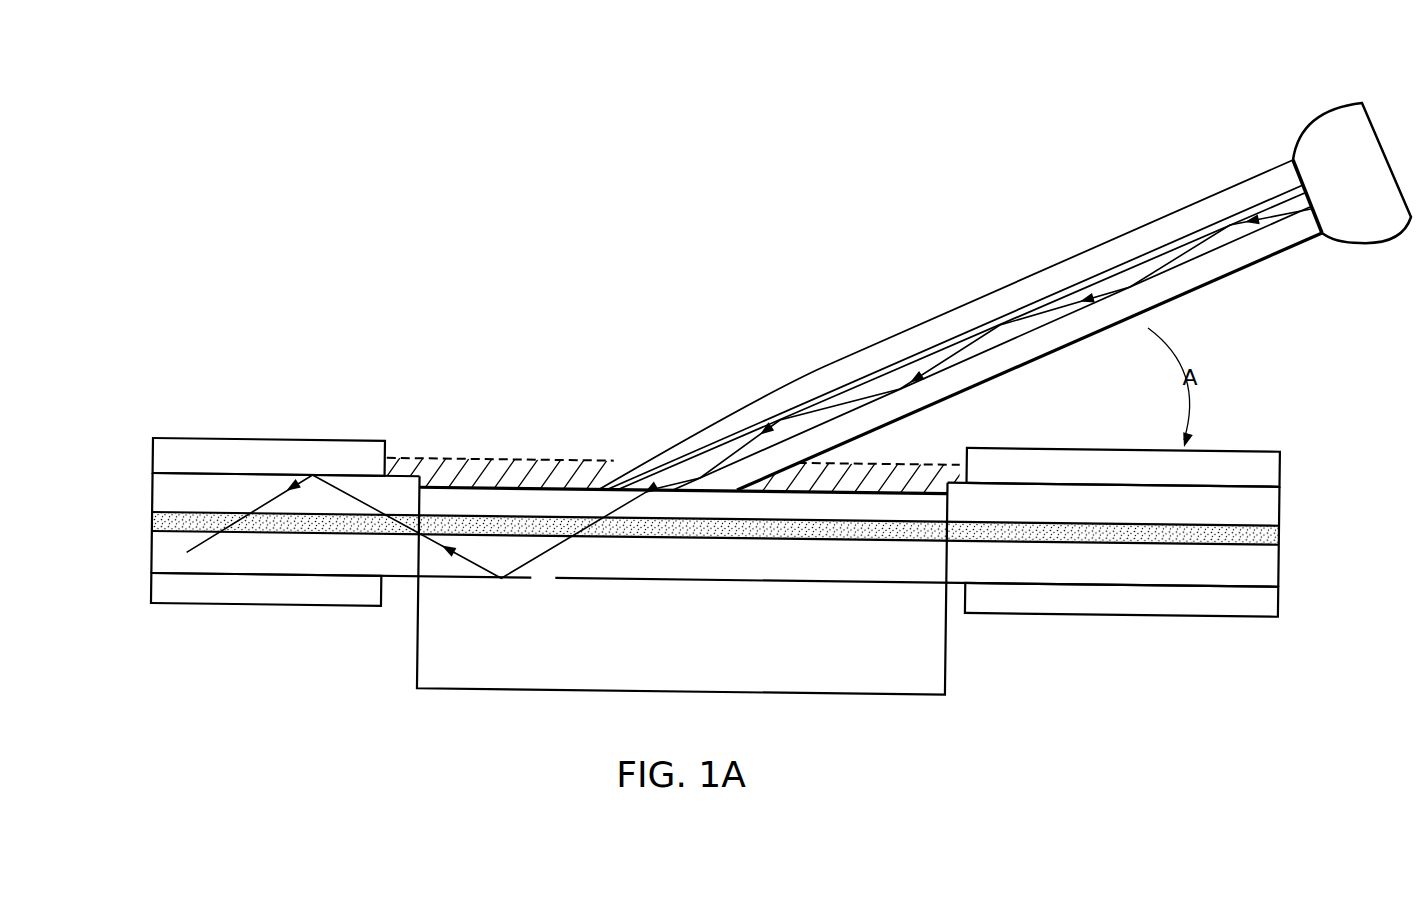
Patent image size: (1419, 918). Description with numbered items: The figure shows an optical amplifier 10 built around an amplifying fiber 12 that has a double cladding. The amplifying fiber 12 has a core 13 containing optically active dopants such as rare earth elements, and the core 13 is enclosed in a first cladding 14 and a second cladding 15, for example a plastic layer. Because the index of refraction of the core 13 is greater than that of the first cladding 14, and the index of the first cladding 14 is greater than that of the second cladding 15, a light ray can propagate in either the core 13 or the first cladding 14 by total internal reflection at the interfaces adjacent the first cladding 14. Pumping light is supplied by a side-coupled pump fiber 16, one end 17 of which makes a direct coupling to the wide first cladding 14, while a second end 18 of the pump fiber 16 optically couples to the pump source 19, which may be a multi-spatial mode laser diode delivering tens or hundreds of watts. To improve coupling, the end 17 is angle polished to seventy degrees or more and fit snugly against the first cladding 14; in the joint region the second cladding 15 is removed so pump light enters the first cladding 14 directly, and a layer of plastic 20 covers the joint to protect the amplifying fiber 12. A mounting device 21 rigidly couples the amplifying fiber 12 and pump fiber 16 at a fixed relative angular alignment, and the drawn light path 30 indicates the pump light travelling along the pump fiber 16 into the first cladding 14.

The optical amplifier 10 is at (930, 196).
The amplifying fiber 12 is at (706, 541).
The core 13 is at (153, 523).
The first cladding 14 is at (1272, 503).
The second cladding 15 is at (173, 455).
The pump fiber 16 is at (936, 325).
The end of the pump fiber 17 is at (592, 482).
The second end of the pump fiber 18 is at (1293, 160).
The pump source 19 is at (1331, 195).
The layer of plastic 20 is at (490, 458).
The mounting device 21 is at (671, 645).
The light beam 30 is at (727, 450).